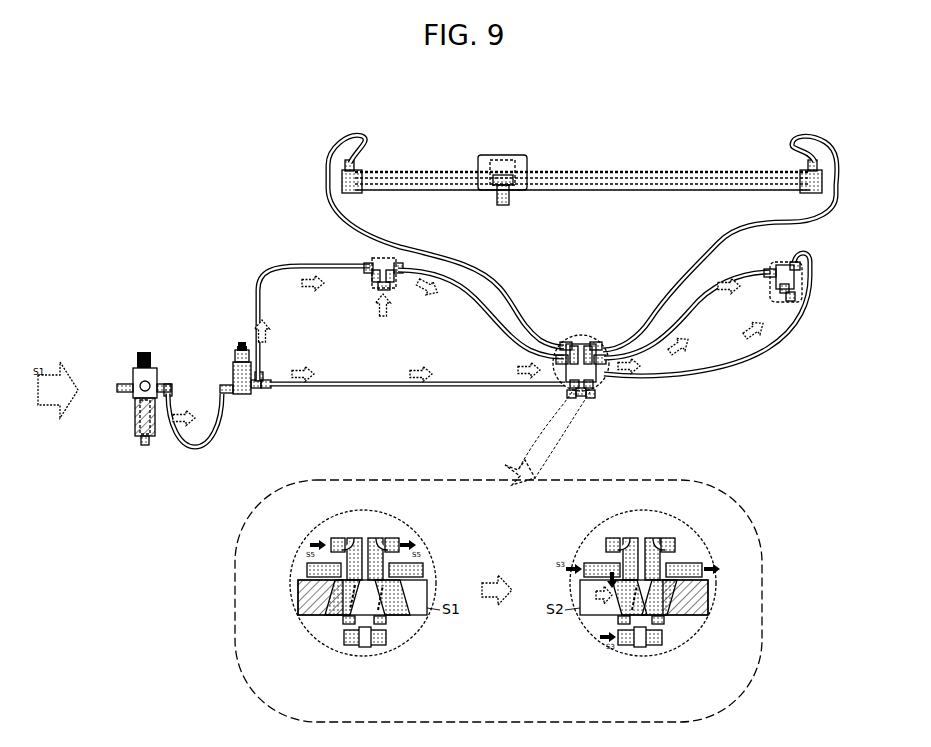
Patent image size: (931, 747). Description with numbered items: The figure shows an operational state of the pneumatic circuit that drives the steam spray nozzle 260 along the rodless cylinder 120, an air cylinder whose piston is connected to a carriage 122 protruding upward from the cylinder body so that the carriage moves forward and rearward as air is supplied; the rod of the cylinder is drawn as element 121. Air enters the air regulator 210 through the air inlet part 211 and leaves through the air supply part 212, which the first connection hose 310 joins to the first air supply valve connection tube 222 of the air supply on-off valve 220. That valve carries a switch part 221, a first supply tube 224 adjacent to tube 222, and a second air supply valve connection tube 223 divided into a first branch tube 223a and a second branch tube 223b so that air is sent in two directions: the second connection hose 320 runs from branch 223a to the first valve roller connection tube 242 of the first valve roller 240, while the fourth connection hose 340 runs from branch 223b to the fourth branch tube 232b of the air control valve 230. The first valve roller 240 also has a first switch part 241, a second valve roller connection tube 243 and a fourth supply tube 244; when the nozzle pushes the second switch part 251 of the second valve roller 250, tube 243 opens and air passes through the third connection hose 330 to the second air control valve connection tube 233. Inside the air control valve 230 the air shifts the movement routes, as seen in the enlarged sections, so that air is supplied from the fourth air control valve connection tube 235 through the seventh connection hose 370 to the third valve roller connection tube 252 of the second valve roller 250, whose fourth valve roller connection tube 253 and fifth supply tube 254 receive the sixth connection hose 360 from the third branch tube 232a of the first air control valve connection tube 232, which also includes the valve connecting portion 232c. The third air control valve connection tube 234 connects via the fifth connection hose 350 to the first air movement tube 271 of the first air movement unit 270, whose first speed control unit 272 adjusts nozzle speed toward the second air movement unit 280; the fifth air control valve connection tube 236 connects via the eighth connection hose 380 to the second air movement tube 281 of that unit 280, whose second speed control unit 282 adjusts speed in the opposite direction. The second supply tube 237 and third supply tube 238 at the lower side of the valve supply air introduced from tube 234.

The rodless cylinder 120 is at (631, 170).
The guide rod 121 is at (750, 180).
The carriage 122 is at (527, 162).
The air regulator 210 is at (133, 390).
The air inlet part 211 is at (122, 384).
The air supply part 212 is at (165, 384).
The air supply on-off valve 220 is at (250, 383).
The switch part 221 is at (241, 342).
The first air supply valve connection tube 222 is at (225, 385).
The second air supply valve connection tube 223 is at (279, 420).
The first branch tube 223a is at (270, 390).
The second branch tube 223b is at (255, 390).
The first supply tube 224 is at (240, 348).
The air control valve 230 is at (503, 511).
The first air control valve connection tube 232 is at (508, 552).
The third branch tube 232a is at (582, 396).
The fourth branch tube 232b is at (571, 396).
The valve connecting portion 232c is at (548, 454).
The second air control valve connection tube 233 is at (556, 362).
The third air control valve connection tube 234 is at (562, 343).
The fourth air control valve connection tube 235 is at (604, 362).
The fifth air control valve connection tube 236 is at (600, 343).
The second supply tube 237 is at (570, 388).
The third supply tube 238 is at (594, 388).
The first valve roller 240 is at (354, 310).
The first switch part 241 is at (383, 290).
The first valve roller connection tube 242 is at (366, 270).
The second valve roller connection tube 243 is at (407, 299).
The fourth supply tube 244 is at (374, 278).
The second valve roller 250 is at (832, 282).
The second switch part 251 is at (790, 291).
The third valve roller connection tube 252 is at (795, 302).
The fourth valve roller connection tube 253 is at (798, 264).
The fifth supply tube 254 is at (790, 274).
The steam spray nozzle 260 is at (496, 192).
The first air movement unit 270 is at (327, 146).
The first air movement tube 271 is at (342, 177).
The first speed control unit 272 is at (374, 116).
The second air movement unit 280 is at (818, 143).
The second air movement tube 281 is at (808, 162).
The second speed control unit 282 is at (815, 160).
The first connection hose 310 is at (197, 449).
The second connection hose 320 is at (285, 264).
The third connection hose 330 is at (475, 300).
The fourth connection hose 340 is at (365, 388).
The fifth connection hose 350 is at (483, 217).
The sixth connection hose 360 is at (690, 380).
The seventh connection hose 370 is at (700, 300).
The eighth connection hose 380 is at (702, 242).